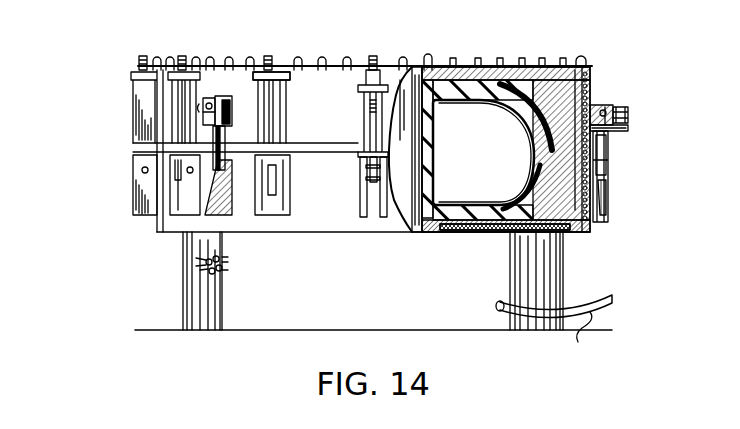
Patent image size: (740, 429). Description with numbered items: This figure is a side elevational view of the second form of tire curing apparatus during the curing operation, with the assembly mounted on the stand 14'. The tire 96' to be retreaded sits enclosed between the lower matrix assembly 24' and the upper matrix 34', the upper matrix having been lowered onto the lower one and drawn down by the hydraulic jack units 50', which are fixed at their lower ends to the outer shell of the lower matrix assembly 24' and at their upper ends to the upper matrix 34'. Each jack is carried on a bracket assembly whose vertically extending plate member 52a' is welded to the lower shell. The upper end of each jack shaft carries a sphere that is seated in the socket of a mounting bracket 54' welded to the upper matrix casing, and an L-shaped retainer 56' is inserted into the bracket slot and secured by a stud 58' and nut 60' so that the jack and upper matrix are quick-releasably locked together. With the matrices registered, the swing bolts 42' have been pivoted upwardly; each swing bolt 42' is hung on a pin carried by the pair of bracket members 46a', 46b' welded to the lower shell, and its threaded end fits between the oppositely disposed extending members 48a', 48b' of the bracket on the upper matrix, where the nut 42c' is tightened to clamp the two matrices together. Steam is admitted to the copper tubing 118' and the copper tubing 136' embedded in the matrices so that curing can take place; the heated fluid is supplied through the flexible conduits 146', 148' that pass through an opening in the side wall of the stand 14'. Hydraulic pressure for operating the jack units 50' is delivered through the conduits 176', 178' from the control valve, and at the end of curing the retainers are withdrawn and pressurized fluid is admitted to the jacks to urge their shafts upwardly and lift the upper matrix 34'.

The stand 14' is at (345, 290).
The lower matrix assembly 24' is at (343, 200).
The upper matrix 34' is at (274, 39).
The swing bolt 42' is at (352, 143).
The nut 42c' is at (365, 47).
The bracket member 46a' is at (345, 182).
The bracket member 46b' is at (343, 198).
The extending member 48a' is at (308, 176).
The extending member 48b' is at (245, 112).
The hydraulic jack unit 50' is at (376, 147).
The plate member 52a' is at (408, 212).
The mounting bracket 54' is at (466, 110).
The L-shaped retainer 56' is at (440, 118).
The stud 58' is at (617, 96).
The nut 60' is at (440, 104).
The tire 96' is at (506, 125).
The copper tubing 118' is at (532, 236).
The copper tubing 136' is at (636, 166).
The flexible conduit 146' is at (575, 338).
The flexible conduit 148' is at (562, 291).
The conduit 176' is at (184, 289).
The conduit 178' is at (180, 273).